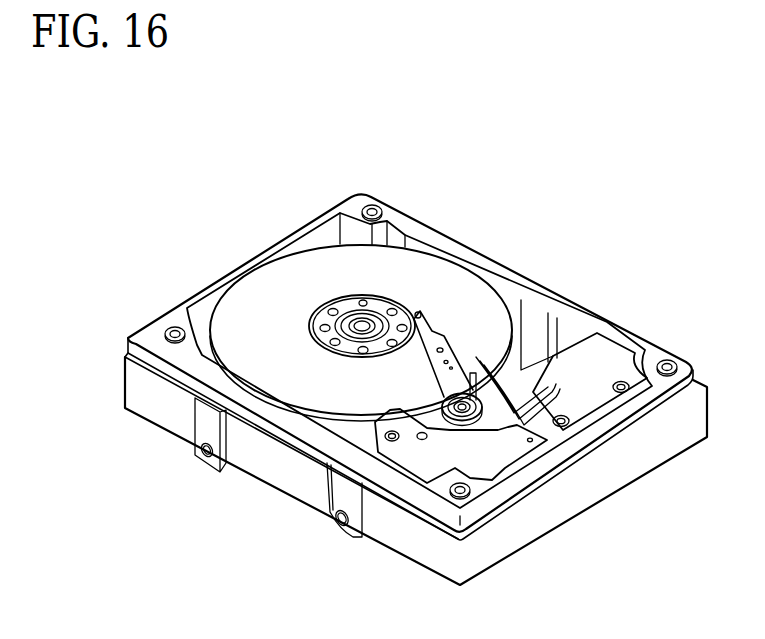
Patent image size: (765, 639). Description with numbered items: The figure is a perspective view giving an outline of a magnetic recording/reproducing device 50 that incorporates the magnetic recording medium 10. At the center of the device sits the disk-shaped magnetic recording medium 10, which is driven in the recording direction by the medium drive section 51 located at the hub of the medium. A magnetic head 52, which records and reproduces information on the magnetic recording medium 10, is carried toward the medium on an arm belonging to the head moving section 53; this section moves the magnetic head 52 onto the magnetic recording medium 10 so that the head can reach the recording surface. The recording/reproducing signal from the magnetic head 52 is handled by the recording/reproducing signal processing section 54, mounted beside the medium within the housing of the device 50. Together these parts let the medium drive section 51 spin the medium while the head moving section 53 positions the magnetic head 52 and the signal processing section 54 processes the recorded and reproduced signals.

The magnetic recording/reproducing device 50 is at (268, 131).
The magnetic recording medium 10 is at (408, 275).
The medium drive section 51 is at (323, 310).
The magnetic head 52 is at (420, 312).
The head moving section 53 is at (503, 457).
The recording/reproducing signal processing section 54 is at (605, 367).